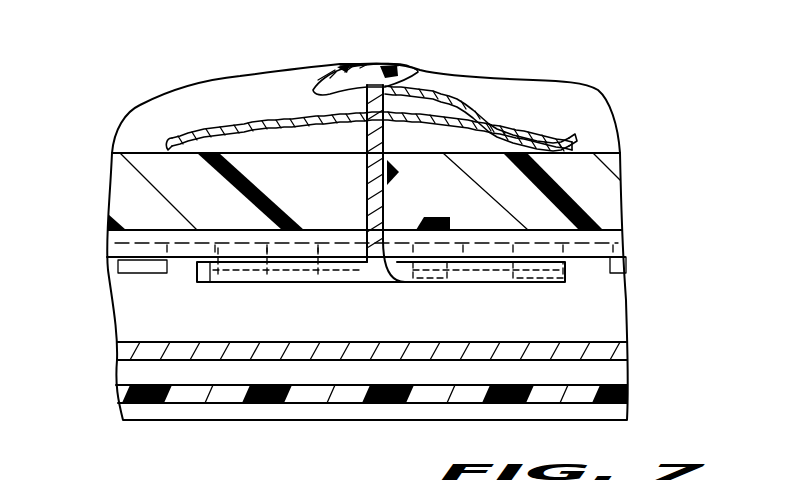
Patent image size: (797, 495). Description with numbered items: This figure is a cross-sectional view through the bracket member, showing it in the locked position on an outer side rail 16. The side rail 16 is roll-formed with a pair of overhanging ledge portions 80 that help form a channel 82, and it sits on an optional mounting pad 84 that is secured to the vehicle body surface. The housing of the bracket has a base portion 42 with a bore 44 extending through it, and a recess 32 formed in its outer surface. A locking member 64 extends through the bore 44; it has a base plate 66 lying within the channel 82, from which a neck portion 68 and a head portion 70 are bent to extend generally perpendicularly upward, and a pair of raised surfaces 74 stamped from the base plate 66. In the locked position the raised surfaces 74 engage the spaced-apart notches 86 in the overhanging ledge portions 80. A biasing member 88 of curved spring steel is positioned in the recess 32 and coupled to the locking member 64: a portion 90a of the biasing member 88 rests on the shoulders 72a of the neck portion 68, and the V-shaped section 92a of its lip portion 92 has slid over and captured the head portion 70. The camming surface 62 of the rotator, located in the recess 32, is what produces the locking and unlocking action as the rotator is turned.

The outer side rail 16 is at (112, 384).
The recess 32 is at (215, 123).
The base portion 42 is at (598, 174).
The bore 44 is at (370, 212).
The camming surface 62 is at (417, 73).
The locking member 64 is at (387, 280).
The base plate 66 is at (293, 284).
The neck portion 68 is at (383, 191).
The head portion 70 is at (360, 99).
The shoulders 72a is at (348, 117).
The raised surfaces 74 is at (438, 264).
The overhanging ledge portions 80 is at (615, 237).
The channel 82 is at (185, 325).
The mounting pad 84 is at (613, 408).
The notches 86 is at (238, 284).
The biasing member 88 is at (508, 129).
The portion of the biasing member 90a is at (396, 124).
The lip portion 92 is at (323, 70).
The V-shaped section 92a is at (350, 66).